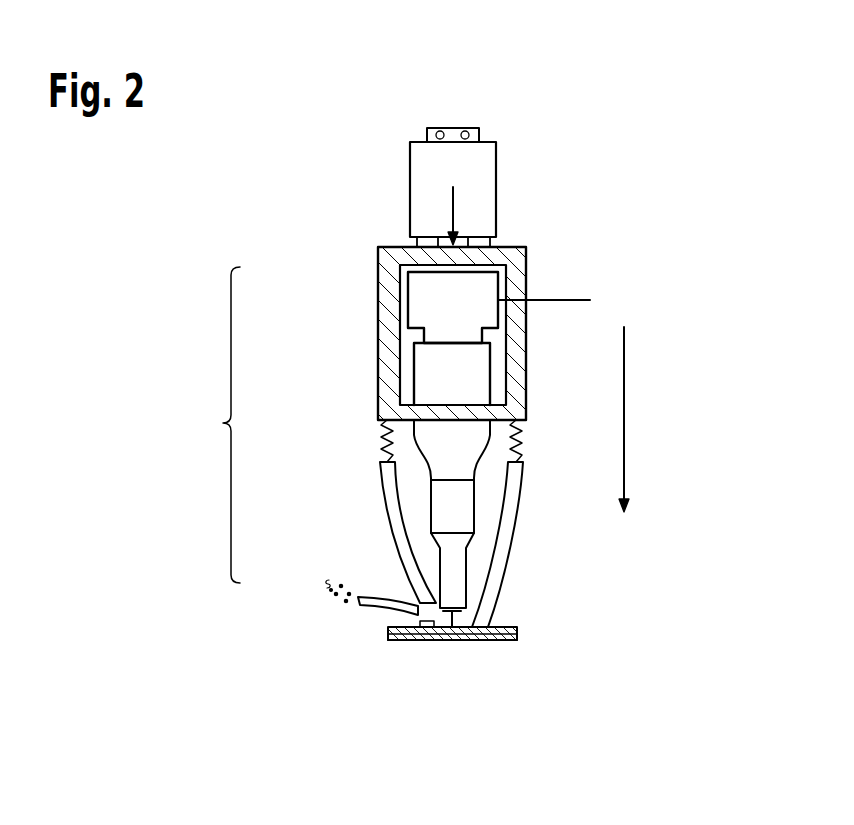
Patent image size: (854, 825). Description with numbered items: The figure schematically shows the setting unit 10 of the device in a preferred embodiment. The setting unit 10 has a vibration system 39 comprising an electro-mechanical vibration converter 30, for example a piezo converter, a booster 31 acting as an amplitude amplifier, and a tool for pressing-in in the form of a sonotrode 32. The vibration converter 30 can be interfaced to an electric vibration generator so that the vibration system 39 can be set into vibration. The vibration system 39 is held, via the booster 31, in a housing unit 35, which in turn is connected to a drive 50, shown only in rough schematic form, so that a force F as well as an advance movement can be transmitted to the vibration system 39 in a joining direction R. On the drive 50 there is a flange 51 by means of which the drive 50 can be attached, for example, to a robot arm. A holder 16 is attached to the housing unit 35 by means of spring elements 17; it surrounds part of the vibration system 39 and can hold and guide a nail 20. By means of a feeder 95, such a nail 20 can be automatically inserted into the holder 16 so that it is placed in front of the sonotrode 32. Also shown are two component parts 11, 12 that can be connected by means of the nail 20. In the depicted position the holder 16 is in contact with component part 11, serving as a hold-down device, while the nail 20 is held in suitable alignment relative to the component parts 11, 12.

The setting unit 10 is at (346, 188).
The component part 11 is at (515, 626).
The component part 12 is at (515, 640).
The holder 16 is at (480, 600).
The spring elements 17 is at (380, 438).
The nail 20 is at (455, 628).
The electro-mechanical vibration converter 30 is at (430, 303).
The booster 31 is at (430, 368).
The sonotrode 32 is at (455, 565).
The housing unit 35 is at (390, 262).
The vibration system 39 is at (212, 425).
The drive 50 is at (483, 177).
The flange 51 is at (470, 128).
The feeder 95 is at (368, 612).
The force F is at (444, 216).
The joining direction R is at (625, 425).